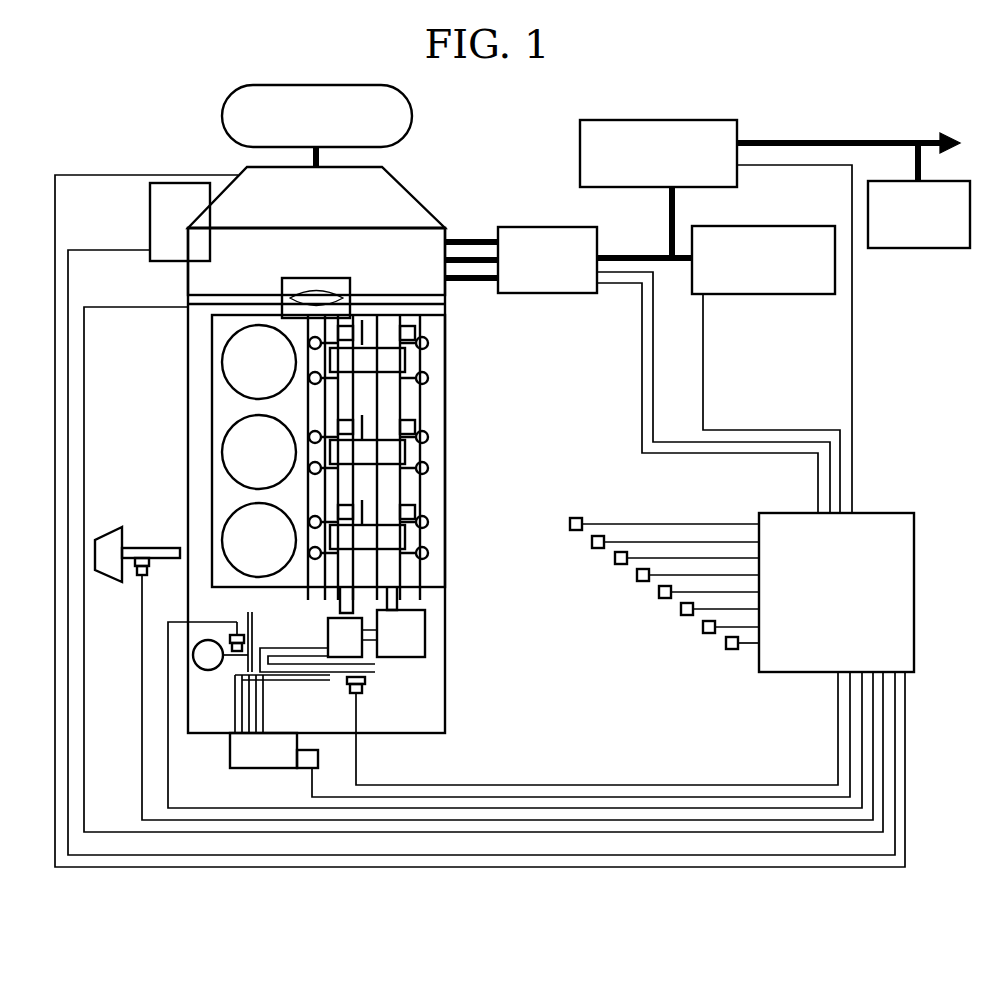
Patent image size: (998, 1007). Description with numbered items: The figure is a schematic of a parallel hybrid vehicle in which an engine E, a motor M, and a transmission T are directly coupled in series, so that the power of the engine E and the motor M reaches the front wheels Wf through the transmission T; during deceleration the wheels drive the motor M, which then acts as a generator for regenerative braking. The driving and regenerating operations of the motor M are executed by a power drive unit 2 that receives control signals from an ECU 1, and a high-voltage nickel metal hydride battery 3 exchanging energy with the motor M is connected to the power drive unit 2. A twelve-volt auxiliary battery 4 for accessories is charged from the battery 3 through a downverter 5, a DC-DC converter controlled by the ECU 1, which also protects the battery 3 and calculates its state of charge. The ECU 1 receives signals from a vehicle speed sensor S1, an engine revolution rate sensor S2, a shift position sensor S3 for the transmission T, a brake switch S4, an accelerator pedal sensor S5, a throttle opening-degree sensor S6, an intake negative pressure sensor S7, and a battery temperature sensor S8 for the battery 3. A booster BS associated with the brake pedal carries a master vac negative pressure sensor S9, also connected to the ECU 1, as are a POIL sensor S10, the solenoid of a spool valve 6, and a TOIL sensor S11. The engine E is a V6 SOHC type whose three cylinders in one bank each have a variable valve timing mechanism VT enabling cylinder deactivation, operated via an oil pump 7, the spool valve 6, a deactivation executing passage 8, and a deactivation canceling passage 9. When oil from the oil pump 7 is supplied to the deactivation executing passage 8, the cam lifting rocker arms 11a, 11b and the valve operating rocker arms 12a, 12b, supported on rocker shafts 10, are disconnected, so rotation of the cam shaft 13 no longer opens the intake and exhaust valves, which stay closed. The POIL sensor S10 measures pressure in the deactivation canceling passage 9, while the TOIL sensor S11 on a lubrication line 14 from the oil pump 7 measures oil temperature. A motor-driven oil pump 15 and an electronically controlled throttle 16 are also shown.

The ECU 1 is at (915, 590).
The power drive unit 2 is at (552, 227).
The nickel metal hydride battery 3 is at (778, 226).
The auxiliary battery 4 is at (925, 248).
The downverter 5 is at (580, 138).
The spool valve 6 is at (228, 742).
The oil pump 7 is at (208, 671).
The deactivation executing passage 8 is at (425, 636).
The deactivation canceling passage 9 is at (380, 675).
The rocker shaft 10 is at (333, 598).
The cam lifting rocker arm 11a is at (330, 360).
The cam lifting rocker arm 11b is at (440, 358).
The valve operating rocker arm 12a is at (309, 343).
The valve operating rocker arm 12b is at (428, 343).
The cam shaft 13 is at (378, 318).
The lubrication line 14 is at (252, 625).
The motor-driven oil pump 15 is at (150, 213).
The electronically controlled throttle 16 is at (285, 290).
The engine E is at (188, 440).
The motor M is at (423, 240).
The transmission T is at (404, 180).
The front wheels Wf is at (222, 113).
The variable valve timing mechanism VT is at (418, 326).
The booster BS is at (108, 527).
The vehicle speed sensor S1 is at (576, 518).
The engine revolution rate sensor S2 is at (592, 542).
The shift position sensor S3 is at (615, 558).
The brake switch S4 is at (637, 575).
The accelerator pedal sensor S5 is at (665, 598).
The throttle opening-degree sensor S6 is at (687, 615).
The intake negative pressure sensor S7 is at (709, 633).
The battery temperature sensor S8 is at (732, 650).
The master vac negative pressure sensor S9 is at (137, 576).
The POIL sensor S10 is at (365, 690).
The TOIL sensor S11 is at (234, 636).